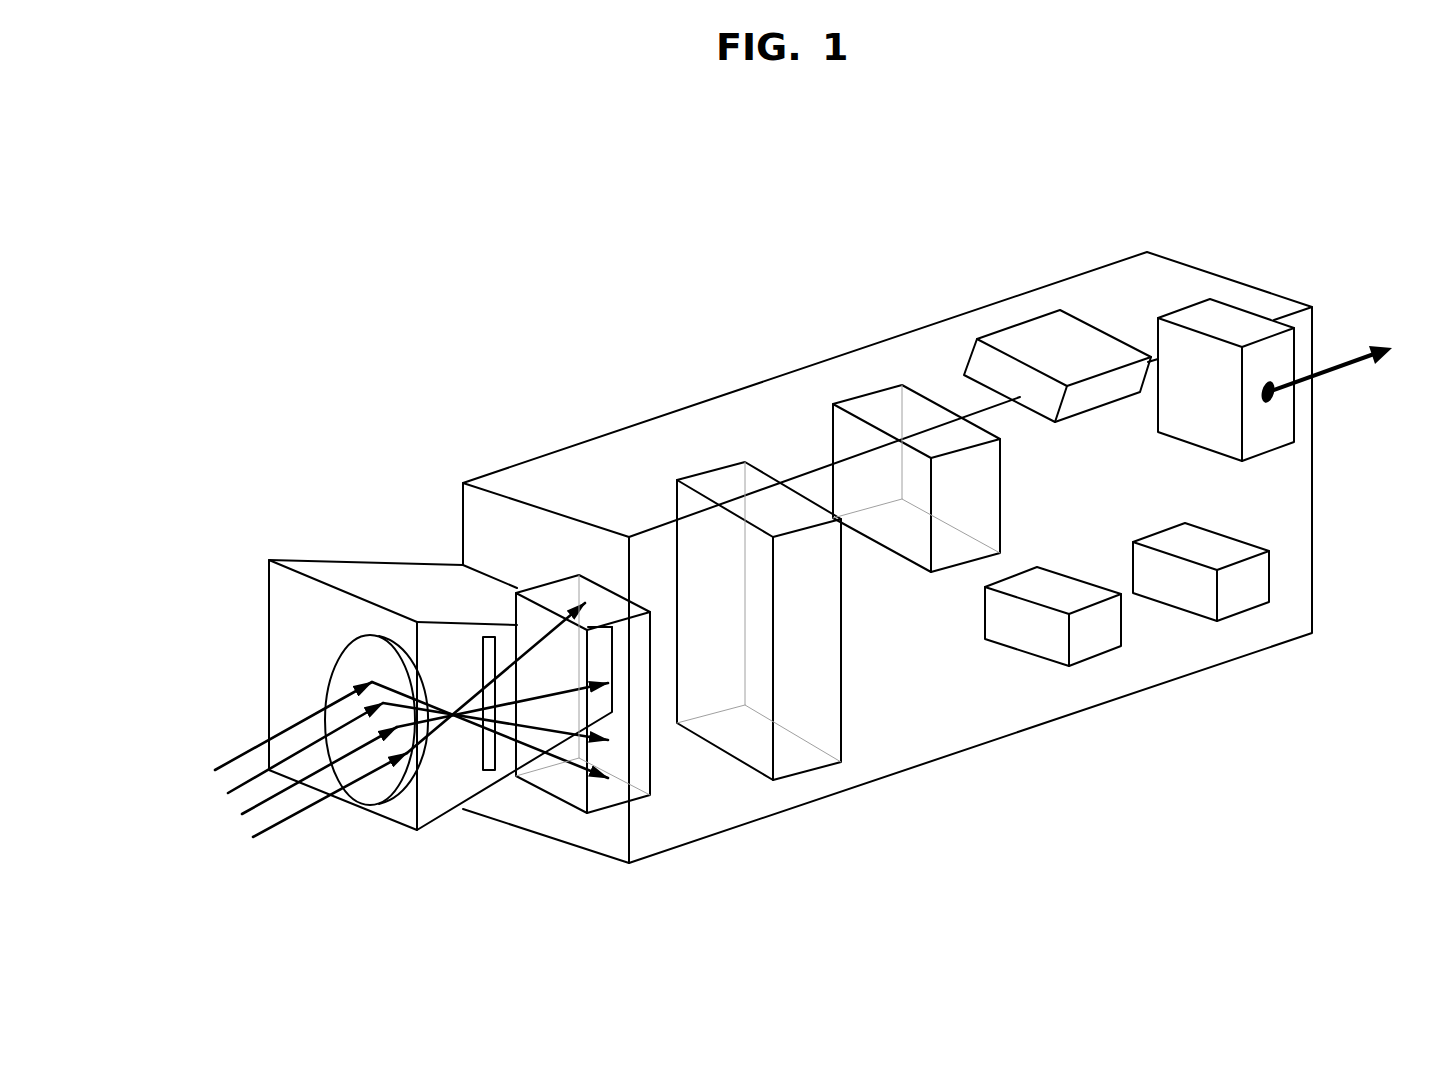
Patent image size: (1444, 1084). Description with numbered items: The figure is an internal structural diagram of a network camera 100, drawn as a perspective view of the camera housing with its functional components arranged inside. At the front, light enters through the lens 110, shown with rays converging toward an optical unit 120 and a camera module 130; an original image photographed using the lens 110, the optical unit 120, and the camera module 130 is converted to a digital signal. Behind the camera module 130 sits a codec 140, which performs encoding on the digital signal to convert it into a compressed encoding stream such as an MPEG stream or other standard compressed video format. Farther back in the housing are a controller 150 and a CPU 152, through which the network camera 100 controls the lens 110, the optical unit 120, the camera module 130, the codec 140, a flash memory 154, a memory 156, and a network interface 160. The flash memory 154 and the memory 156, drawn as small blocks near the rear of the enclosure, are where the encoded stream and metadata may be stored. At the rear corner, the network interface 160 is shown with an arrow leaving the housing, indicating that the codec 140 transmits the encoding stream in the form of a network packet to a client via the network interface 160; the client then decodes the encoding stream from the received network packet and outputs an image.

The network camera 100 is at (1226, 149).
The lens 110 is at (340, 658).
The optical unit 120 is at (487, 760).
The camera module 130 is at (608, 798).
The codec 140 is at (800, 762).
The controller 150 is at (878, 402).
The CPU 152 is at (1032, 333).
The flash memory 154 is at (1090, 648).
The memory 156 is at (1242, 601).
The network interface 160 is at (1265, 250).